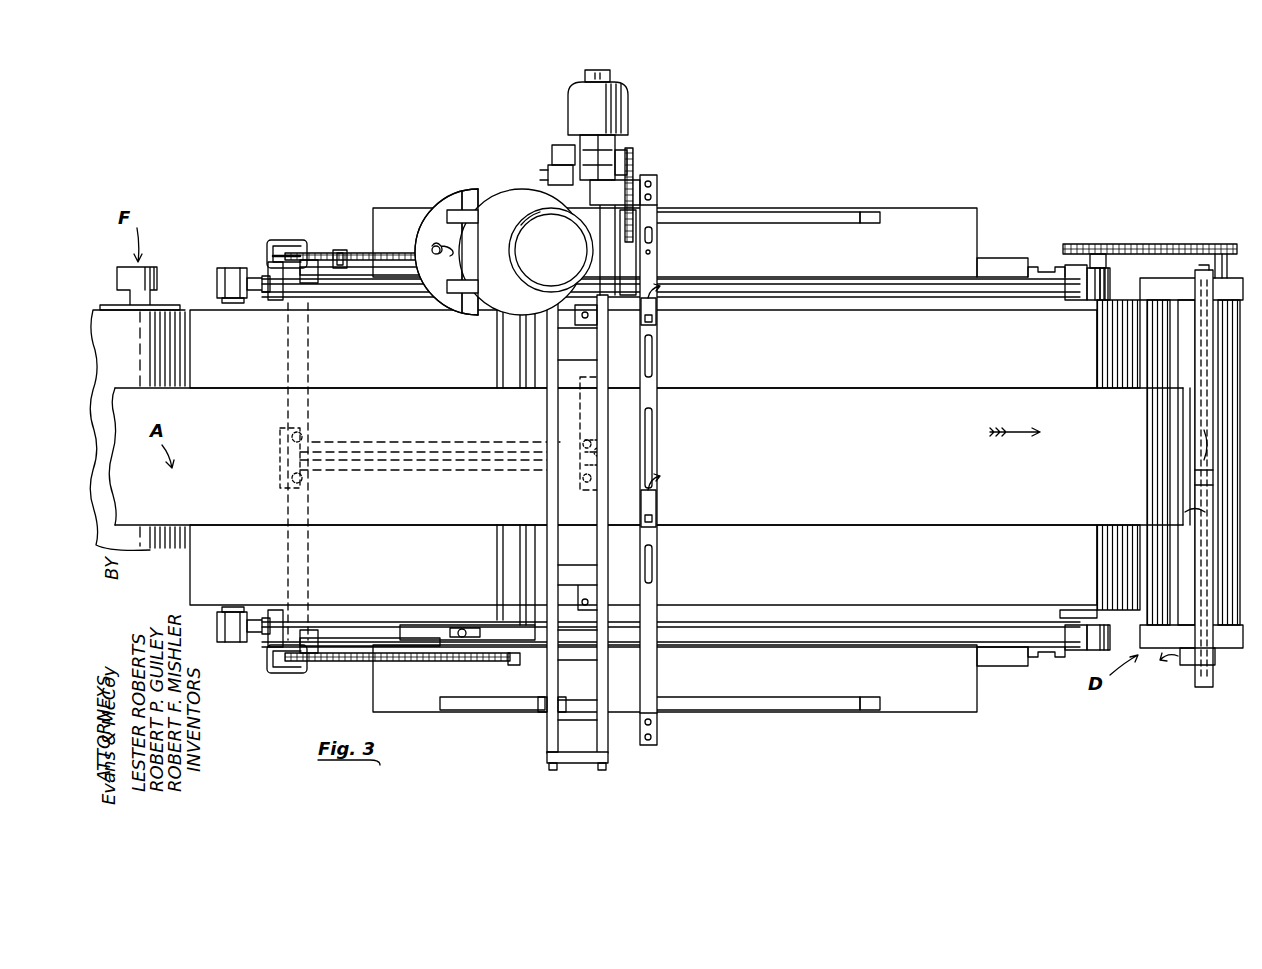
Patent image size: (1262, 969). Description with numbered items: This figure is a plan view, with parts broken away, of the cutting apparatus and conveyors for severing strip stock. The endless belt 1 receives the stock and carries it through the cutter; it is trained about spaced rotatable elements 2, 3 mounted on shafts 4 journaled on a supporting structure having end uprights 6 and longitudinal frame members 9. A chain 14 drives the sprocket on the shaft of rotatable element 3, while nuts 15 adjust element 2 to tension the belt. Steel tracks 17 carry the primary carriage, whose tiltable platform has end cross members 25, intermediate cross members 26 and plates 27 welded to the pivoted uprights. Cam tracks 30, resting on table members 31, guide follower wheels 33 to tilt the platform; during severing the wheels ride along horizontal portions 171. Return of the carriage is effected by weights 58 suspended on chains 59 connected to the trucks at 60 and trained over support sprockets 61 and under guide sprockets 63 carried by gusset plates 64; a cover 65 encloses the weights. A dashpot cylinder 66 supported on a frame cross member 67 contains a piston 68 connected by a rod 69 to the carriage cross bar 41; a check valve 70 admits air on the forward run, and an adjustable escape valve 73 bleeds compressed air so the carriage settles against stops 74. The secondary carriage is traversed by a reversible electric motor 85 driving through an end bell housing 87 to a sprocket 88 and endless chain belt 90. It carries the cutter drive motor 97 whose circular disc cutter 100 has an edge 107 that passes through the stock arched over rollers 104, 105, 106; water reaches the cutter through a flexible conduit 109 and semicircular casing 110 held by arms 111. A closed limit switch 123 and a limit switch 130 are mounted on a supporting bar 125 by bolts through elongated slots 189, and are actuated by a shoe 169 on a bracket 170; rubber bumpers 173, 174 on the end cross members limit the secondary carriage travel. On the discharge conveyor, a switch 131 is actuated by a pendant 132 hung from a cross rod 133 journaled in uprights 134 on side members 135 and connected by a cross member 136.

The endless belt 1 is at (940, 556).
The rotatable element 2 is at (198, 312).
The rotatable element 3 is at (1078, 610).
The shaft 4 is at (225, 268).
The upright 6 is at (1045, 266).
The longitudinal frame member 9 is at (1000, 258).
The chain 14 is at (1170, 244).
The nut 15 is at (258, 278).
The steel track 17 is at (898, 278).
The end cross member 25 is at (582, 765).
The intermediate cross member 26 is at (580, 365).
The plate 27 is at (577, 642).
The cam track 30 is at (790, 212).
The table member 31 is at (933, 210).
The follower wheel 33 is at (540, 705).
The carriage cross bar 41 is at (578, 418).
The weight 58 is at (292, 252).
The chain 59 is at (350, 253).
The chain connection 60 is at (514, 665).
The support sprocket 61 is at (318, 284).
The guide sprocket 63 is at (335, 250).
The gusset plate 64 is at (360, 286).
The cover 65 is at (284, 240).
The cylinder 66 is at (430, 442).
The frame cross member 67 is at (318, 588).
The piston 68 is at (312, 442).
The rod 69 is at (575, 472).
The check valve 70 is at (280, 480).
The adjustable escape valve 73 is at (282, 432).
The stop 74 is at (475, 627).
The reversible electric motor 85 is at (625, 108).
The end bell housing 87 is at (588, 140).
The sprocket 88 is at (622, 150).
The endless chain belt 90 is at (636, 166).
The cutter drive motor 97 is at (533, 262).
The circular disc cutter 100 is at (552, 172).
The roller 104 is at (497, 545).
The roller 105 is at (520, 566).
The roller 106 is at (545, 372).
The cutter edge 107 is at (505, 198).
The flexible conduit 109 is at (438, 248).
The semicircular casing 110 is at (440, 208).
The arm 111 is at (462, 212).
The closed limit switch 123 is at (657, 505).
The supporting bar 125 is at (652, 402).
The limit switch 130 is at (657, 318).
The switch 131 is at (1188, 665).
The pendant 132 is at (1205, 442).
The cross rod 133 is at (1198, 480).
The upright 134 is at (1220, 262).
The side member 135 is at (1150, 285).
The cross member 136 is at (1193, 410).
The shoe 169 is at (656, 238).
The bracket 170 is at (656, 256).
The horizontal cam track portion 171 is at (487, 705).
The rubber bumper 173 is at (550, 752).
The rubber bumper 174 is at (558, 150).
The elongated slot 189 is at (654, 366).